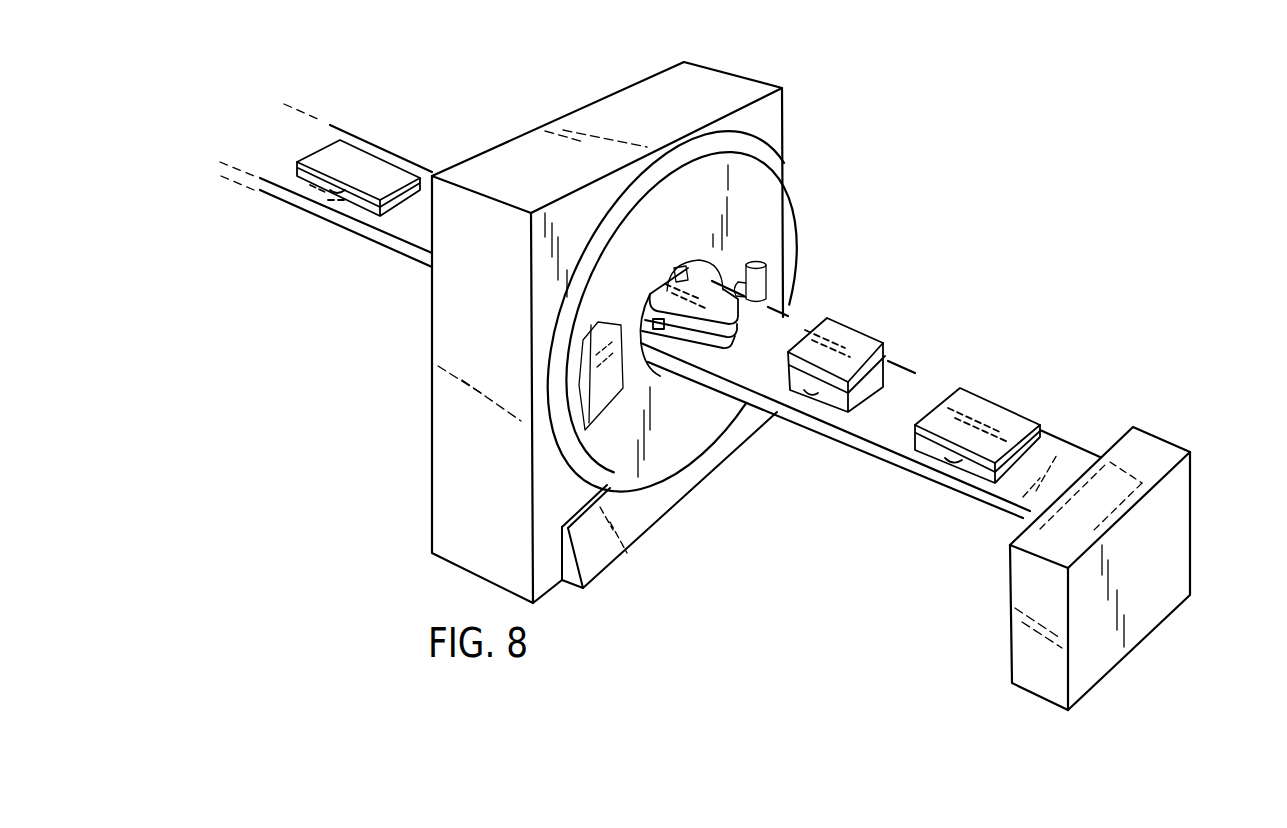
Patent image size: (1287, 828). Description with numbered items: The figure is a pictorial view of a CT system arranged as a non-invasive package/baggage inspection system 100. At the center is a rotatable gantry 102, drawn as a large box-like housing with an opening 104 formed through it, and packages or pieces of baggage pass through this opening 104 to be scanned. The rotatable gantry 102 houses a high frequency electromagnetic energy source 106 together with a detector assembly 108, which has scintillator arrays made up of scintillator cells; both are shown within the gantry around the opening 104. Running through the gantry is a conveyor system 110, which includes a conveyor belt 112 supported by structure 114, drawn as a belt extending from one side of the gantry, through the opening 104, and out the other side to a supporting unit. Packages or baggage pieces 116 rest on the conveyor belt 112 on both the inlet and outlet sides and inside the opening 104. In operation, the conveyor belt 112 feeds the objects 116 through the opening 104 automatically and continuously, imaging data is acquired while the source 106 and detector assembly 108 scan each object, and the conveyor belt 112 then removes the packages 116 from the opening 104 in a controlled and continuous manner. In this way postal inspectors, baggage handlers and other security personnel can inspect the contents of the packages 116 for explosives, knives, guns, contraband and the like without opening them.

The package/baggage inspection system 100 is at (1012, 220).
The rotatable gantry 102 is at (780, 207).
The opening 104 is at (701, 271).
The high frequency electromagnetic energy source 106 is at (767, 282).
The detector assembly 108 is at (601, 406).
The conveyor system 110 is at (220, 202).
The conveyor belt 112 is at (392, 232).
The structure 114 is at (1180, 533).
The packages or baggage pieces 116 is at (373, 165).